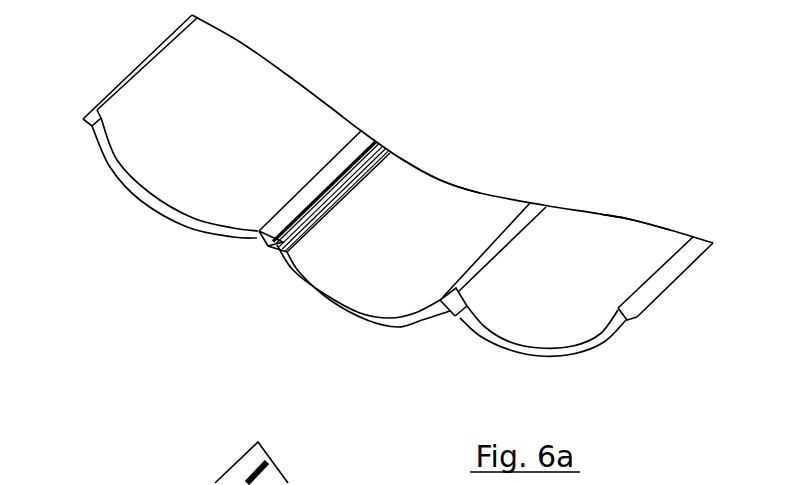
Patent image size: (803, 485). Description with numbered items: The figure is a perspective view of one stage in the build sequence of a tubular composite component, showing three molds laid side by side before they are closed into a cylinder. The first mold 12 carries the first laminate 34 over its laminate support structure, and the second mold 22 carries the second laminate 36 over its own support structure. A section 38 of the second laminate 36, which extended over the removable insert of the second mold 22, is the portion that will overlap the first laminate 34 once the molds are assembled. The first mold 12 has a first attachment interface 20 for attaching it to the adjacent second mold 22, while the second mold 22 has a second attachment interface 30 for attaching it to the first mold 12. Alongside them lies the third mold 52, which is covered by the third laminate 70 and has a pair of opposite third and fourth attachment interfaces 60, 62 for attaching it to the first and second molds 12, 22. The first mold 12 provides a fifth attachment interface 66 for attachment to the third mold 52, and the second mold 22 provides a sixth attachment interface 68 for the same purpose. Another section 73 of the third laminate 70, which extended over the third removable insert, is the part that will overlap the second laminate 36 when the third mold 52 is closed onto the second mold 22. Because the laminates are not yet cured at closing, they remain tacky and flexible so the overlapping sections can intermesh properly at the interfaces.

The first mold 12 is at (323, 293).
The first attachment interface 20 is at (447, 313).
The second mold 22 is at (587, 350).
The second attachment interface 30 is at (457, 316).
The first laminate 34 is at (433, 192).
The second laminate 36 is at (610, 232).
The section of the second laminate 38 is at (472, 293).
The third mold 52 is at (153, 208).
The third attachment interface 60 is at (263, 240).
The fourth attachment interface 62 is at (85, 120).
The fifth attachment interface 66 is at (273, 248).
The sixth attachment interface 68 is at (630, 318).
The third laminate 70 is at (280, 100).
The section of the third laminate 73 is at (107, 113).